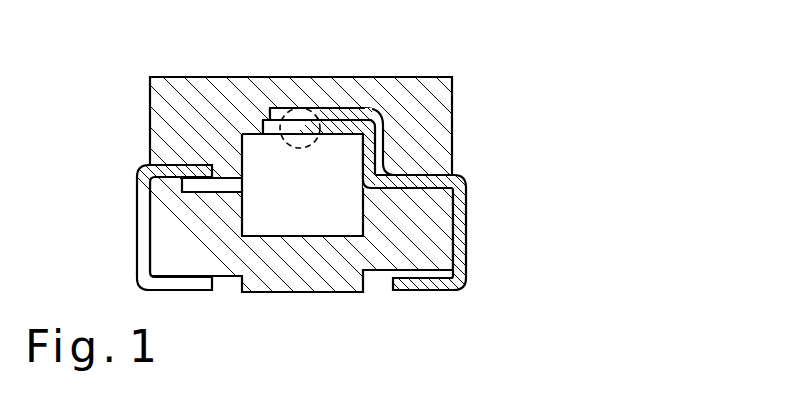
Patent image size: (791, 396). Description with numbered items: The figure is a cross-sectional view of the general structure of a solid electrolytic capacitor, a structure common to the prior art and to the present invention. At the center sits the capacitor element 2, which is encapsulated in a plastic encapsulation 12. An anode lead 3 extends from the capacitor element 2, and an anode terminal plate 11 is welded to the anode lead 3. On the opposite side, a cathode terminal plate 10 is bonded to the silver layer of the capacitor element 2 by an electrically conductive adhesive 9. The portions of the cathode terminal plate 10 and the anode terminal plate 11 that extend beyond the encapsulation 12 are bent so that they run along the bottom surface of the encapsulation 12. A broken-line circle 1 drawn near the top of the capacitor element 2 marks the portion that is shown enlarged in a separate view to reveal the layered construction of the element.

The broken-line circle 1 is at (323, 108).
The capacitor element 2 is at (290, 248).
The anode lead 3 is at (223, 183).
The electrically conductive adhesive 9 is at (385, 134).
The cathode terminal plate 10 is at (467, 190).
The anode terminal plate 11 is at (138, 198).
The plastic encapsulation 12 is at (150, 115).